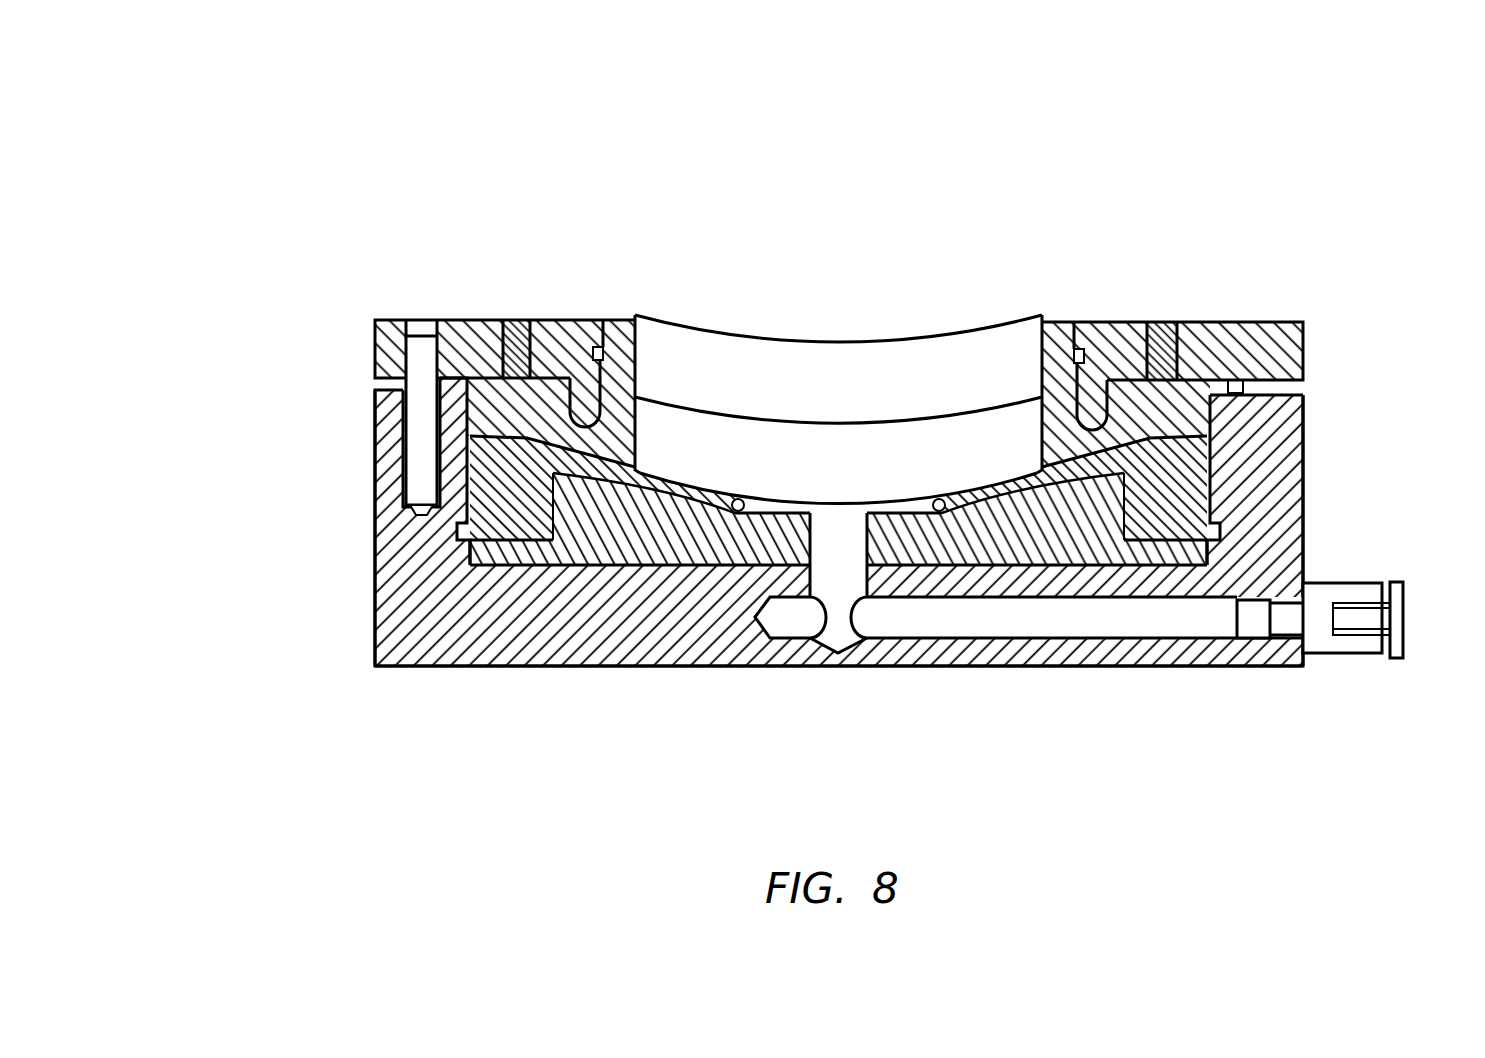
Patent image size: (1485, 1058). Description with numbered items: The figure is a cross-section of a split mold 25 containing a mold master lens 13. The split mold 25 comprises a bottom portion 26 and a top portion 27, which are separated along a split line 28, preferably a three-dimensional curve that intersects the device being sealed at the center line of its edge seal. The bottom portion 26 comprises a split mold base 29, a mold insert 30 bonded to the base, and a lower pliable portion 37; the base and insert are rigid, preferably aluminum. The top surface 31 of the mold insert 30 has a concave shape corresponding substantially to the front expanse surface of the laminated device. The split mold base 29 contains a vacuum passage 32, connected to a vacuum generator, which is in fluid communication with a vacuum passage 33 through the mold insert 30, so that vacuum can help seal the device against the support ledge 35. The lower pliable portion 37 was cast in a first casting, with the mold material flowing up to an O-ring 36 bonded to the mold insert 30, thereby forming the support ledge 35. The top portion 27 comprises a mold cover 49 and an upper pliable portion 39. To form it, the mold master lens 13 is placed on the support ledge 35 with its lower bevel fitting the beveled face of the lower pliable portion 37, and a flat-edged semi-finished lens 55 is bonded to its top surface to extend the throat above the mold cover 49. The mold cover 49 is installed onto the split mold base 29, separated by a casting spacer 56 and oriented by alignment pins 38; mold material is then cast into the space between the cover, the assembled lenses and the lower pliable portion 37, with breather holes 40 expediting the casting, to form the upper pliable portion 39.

The mold master lens 13 is at (790, 467).
The split mold 25 is at (265, 405).
The bottom portion 26 is at (372, 520).
The top portion 27 is at (375, 318).
The split line 28 is at (527, 434).
The split mold base 29 is at (448, 642).
The mold insert 30 is at (1105, 548).
The top surface 31 is at (883, 500).
The vacuum passage 32 is at (1108, 628).
The vacuum passage 33 is at (838, 553).
The support ledge 35 is at (703, 507).
The O-ring 36 is at (738, 514).
The lower pliable portion 37 is at (512, 533).
The alignment pin 38 is at (413, 375).
The upper pliable portion 39 is at (613, 345).
The breather hole 40 is at (520, 318).
The mold cover 49 is at (488, 318).
The flat-edged semi-finished lens 55 is at (752, 352).
The casting spacer 56 is at (455, 365).